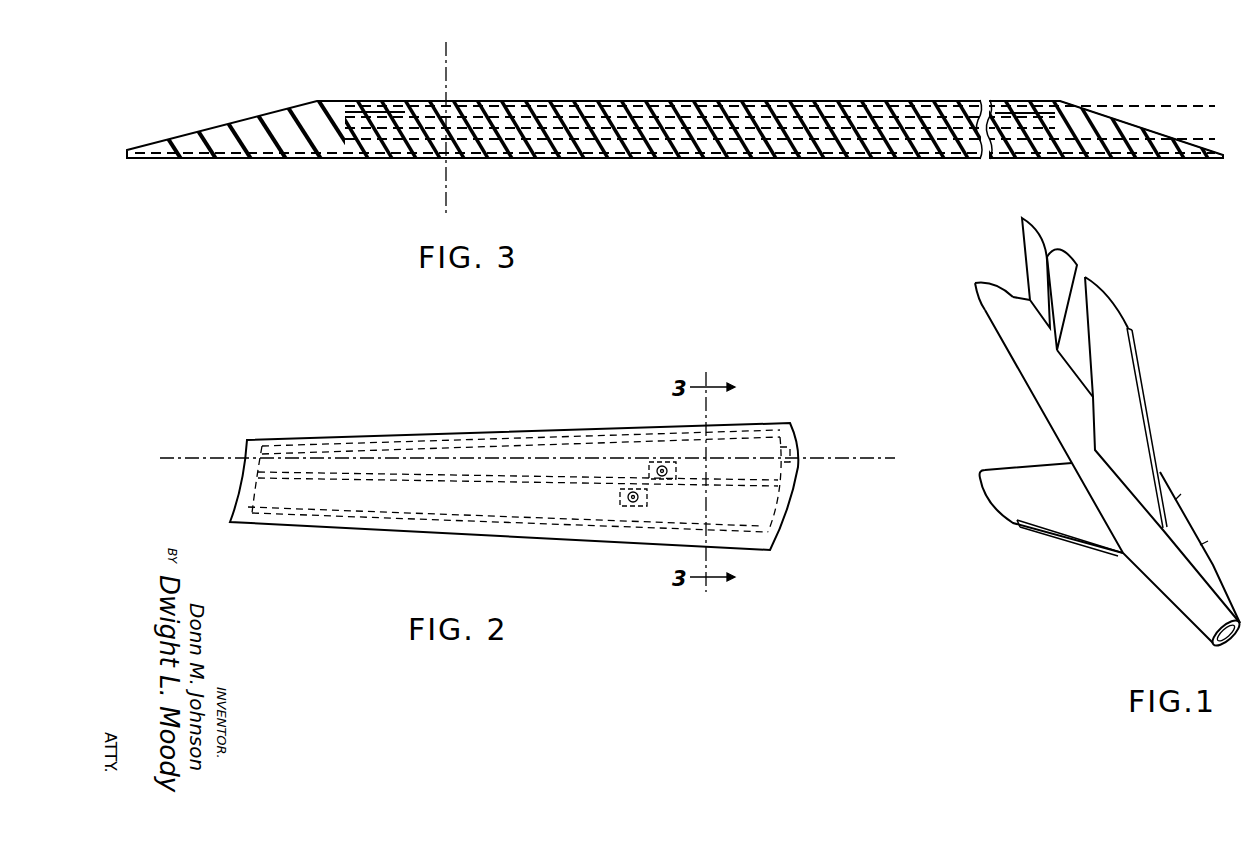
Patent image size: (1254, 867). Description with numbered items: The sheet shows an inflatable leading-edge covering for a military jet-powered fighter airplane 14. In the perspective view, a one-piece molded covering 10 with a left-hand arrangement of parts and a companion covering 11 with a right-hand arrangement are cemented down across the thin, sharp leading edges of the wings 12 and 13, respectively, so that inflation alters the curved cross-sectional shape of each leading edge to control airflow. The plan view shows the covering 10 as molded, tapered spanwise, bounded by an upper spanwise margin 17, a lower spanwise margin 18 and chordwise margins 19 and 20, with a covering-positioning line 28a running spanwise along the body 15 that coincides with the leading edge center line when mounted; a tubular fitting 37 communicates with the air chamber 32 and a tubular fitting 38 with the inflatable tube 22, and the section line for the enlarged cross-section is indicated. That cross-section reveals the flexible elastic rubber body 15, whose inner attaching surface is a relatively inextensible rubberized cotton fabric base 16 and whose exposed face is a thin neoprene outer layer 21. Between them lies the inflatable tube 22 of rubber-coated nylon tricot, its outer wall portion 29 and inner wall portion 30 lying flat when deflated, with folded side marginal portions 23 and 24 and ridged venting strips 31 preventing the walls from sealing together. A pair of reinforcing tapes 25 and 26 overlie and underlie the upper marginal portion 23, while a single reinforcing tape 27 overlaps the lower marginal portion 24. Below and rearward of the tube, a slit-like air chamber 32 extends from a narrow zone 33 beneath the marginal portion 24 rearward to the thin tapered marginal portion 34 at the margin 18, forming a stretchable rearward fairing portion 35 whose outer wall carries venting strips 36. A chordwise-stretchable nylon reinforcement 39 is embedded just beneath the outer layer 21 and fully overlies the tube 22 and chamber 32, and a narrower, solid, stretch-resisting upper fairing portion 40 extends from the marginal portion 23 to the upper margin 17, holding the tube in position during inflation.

In FIG. 3, the inflatable covering 10 is at (1077, 86).
In FIG. 2, the inflatable covering 10 is at (482, 412).
In FIG. 1, the inflatable covering 10 is at (1146, 410).
In FIG. 1, the inflatable covering 11 is at (1075, 540).
In FIG. 1, the wing 12 is at (1110, 305).
In FIG. 1, the wing 13 is at (1005, 505).
In FIG. 1, the jet-powered fighter airplane 14 is at (1170, 614).
In FIG. 3, the flexible body 15 is at (1092, 122).
In FIG. 3, the reinforcing fabric base 16 is at (270, 160).
In FIG. 3, the upper spanwise margin 17 is at (127, 153).
In FIG. 2, the upper spanwise margin 17 is at (450, 437).
In FIG. 3, the lower spanwise margin 18 is at (1224, 156).
In FIG. 2, the lower spanwise margin 18 is at (452, 535).
In FIG. 1, the lower spanwise margin 18 is at (1140, 449).
In FIG. 2, the chordwise margin 19 is at (790, 506).
In FIG. 1, the chordwise margin 19 is at (1165, 535).
In FIG. 2, the chordwise margin 20 is at (240, 496).
In FIG. 1, the chordwise margin 20 is at (1132, 328).
In FIG. 3, the outer layer 21 is at (768, 106).
In FIG. 3, the inflatable tube 22 is at (476, 113).
In FIG. 2, the inflatable tube 22 is at (597, 450).
In FIG. 3, the upper side marginal portion 23 is at (348, 135).
In FIG. 3, the lower side marginal portion 24 is at (764, 130).
In FIG. 3, the reinforcing tape 25 is at (367, 112).
In FIG. 3, the reinforcing tape 26 is at (378, 142).
In FIG. 3, the reinforcing tape 27 is at (790, 126).
In FIG. 3, the covering-positioning line 28a is at (452, 66).
In FIG. 2, the covering-positioning line 28a is at (826, 452).
In FIG. 3, the outer wall portion 29 is at (656, 122).
In FIG. 3, the inner wall portion 30 is at (496, 142).
In FIG. 3, the venting strip 31 is at (560, 124).
In FIG. 3, the air chamber 32 is at (988, 142).
In FIG. 2, the air chamber 32 is at (778, 474).
In FIG. 3, the narrow zone 33 is at (700, 140).
In FIG. 3, the tapered marginal portion 34 is at (1140, 124).
In FIG. 3, the rearward fairing portion 35 is at (926, 128).
In FIG. 2, the rearward fairing portion 35 is at (765, 524).
In FIG. 3, the venting strip 36 is at (832, 137).
In FIG. 2, the tubular fitting 37 is at (622, 502).
In FIG. 2, the tubular fitting 38 is at (670, 478).
In FIG. 3, the stress-resisting reinforcement 39 is at (1050, 112).
In FIG. 2, the stress-resisting reinforcement 39 is at (530, 530).
In FIG. 3, the upper fairing portion 40 is at (295, 115).
In FIG. 2, the upper fairing portion 40 is at (752, 440).